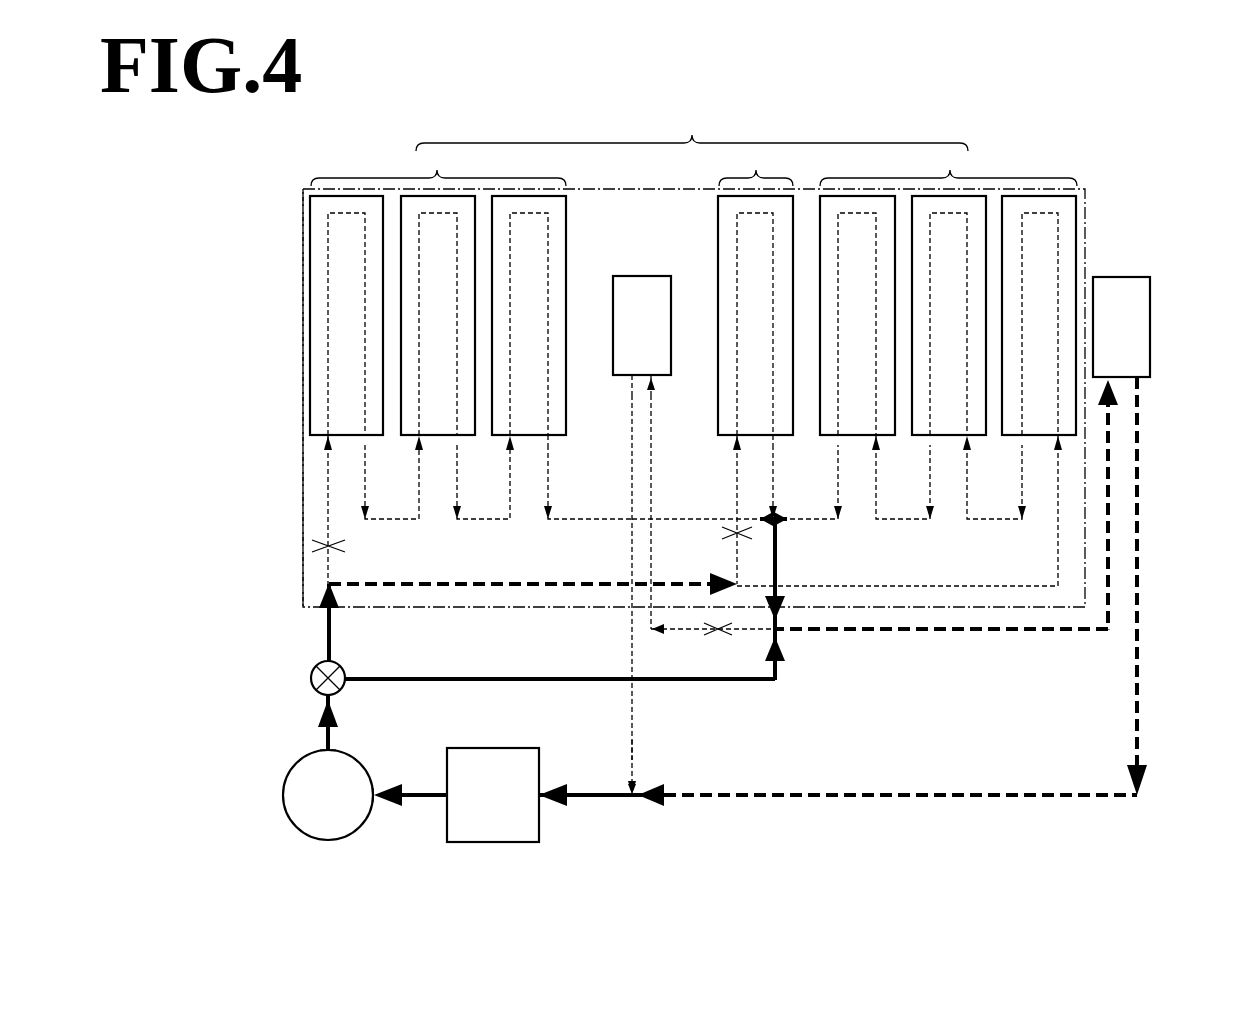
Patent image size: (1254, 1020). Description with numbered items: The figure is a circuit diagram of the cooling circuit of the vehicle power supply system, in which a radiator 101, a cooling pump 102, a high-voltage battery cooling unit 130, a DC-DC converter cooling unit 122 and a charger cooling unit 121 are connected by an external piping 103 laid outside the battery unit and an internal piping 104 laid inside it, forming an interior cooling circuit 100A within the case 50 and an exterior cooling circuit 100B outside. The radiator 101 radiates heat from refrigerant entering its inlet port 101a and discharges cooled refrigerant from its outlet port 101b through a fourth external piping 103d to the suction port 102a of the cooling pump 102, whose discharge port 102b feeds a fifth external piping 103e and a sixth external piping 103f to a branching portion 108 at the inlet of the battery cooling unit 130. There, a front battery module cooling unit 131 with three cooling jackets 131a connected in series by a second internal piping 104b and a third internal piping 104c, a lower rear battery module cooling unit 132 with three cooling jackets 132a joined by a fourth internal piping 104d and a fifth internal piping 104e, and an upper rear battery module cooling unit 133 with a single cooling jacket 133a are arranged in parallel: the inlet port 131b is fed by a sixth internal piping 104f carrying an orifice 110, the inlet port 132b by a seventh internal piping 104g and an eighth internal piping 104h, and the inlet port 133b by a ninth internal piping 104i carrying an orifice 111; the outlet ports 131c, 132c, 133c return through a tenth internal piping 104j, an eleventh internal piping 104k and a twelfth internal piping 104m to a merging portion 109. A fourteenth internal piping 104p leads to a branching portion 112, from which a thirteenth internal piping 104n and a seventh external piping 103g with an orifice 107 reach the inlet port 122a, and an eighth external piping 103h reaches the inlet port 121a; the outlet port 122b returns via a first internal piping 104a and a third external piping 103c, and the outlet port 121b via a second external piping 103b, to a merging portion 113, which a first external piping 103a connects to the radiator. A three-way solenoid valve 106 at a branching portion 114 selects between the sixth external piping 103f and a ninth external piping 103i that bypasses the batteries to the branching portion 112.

The case 50 is at (1085, 198).
The interior cooling circuit 100A is at (300, 254).
The exterior cooling circuit 100B is at (1150, 678).
The high-voltage battery cooling unit 130 is at (692, 132).
The front battery module cooling unit 131 is at (438, 291).
The lower rear battery module cooling unit 132 is at (948, 291).
The upper rear battery module cooling unit 133 is at (755, 291).
The cooling jackets 131a is at (510, 300).
The cooling jackets 132a is at (838, 230).
The cooling jacket 133a is at (718, 228).
The inlet port 131b is at (323, 437).
The outlet port 131c is at (548, 437).
The inlet port 132b is at (1058, 440).
The outlet port 132c is at (876, 450).
The inlet port 133b is at (737, 445).
The outlet port 133c is at (773, 442).
The charger cooling unit 121 is at (1150, 296).
The inlet port 121a is at (1108, 380).
The outlet port 121b is at (1137, 385).
The DC-DC converter cooling unit 122 is at (630, 276).
The inlet port 122a is at (655, 385).
The outlet port 122b is at (632, 385).
The radiator 101 is at (490, 843).
The inlet port 101a is at (541, 794).
The outlet port 101b is at (447, 788).
The cooling pump 102 is at (325, 841).
The suction port 102a is at (373, 800).
The discharge port 102b is at (326, 748).
The external piping 103 is at (728, 800).
The first external piping 103a is at (590, 797).
The second external piping 103b is at (905, 797).
The third external piping 103c is at (634, 757).
The fourth external piping 103d is at (420, 800).
The fifth external piping 103e is at (332, 738).
The sixth external piping 103f is at (334, 632).
The seventh external piping 103g is at (666, 631).
The eighth external piping 103h is at (1030, 632).
The ninth external piping 103i is at (560, 703).
The internal piping 104 is at (1068, 545).
The first internal piping 104a is at (651, 492).
The second internal piping 104b is at (390, 519).
The third internal piping 104c is at (480, 519).
The fourth internal piping 104d is at (990, 519).
The fifth internal piping 104e is at (900, 519).
The sixth internal piping 104f is at (328, 507).
The seventh internal piping 104g is at (945, 588).
The eighth internal piping 104h is at (515, 588).
The ninth internal piping 104i is at (773, 490).
The tenth internal piping 104j is at (575, 519).
The eleventh internal piping 104k is at (822, 519).
The twelfth internal piping 104m is at (760, 519).
The thirteenth internal piping 104n is at (632, 500).
The fourteenth internal piping 104p is at (782, 600).
The three-way solenoid valve 106 is at (262, 678).
The branching portion 114 is at (310, 679).
The orifice 107 is at (722, 655).
The branching portion 108 is at (320, 585).
The merging portion 109 is at (778, 523).
The orifice 110 is at (304, 548).
The orifice 111 is at (716, 535).
The branching portion 112 is at (778, 682).
The merging portion 113 is at (634, 797).